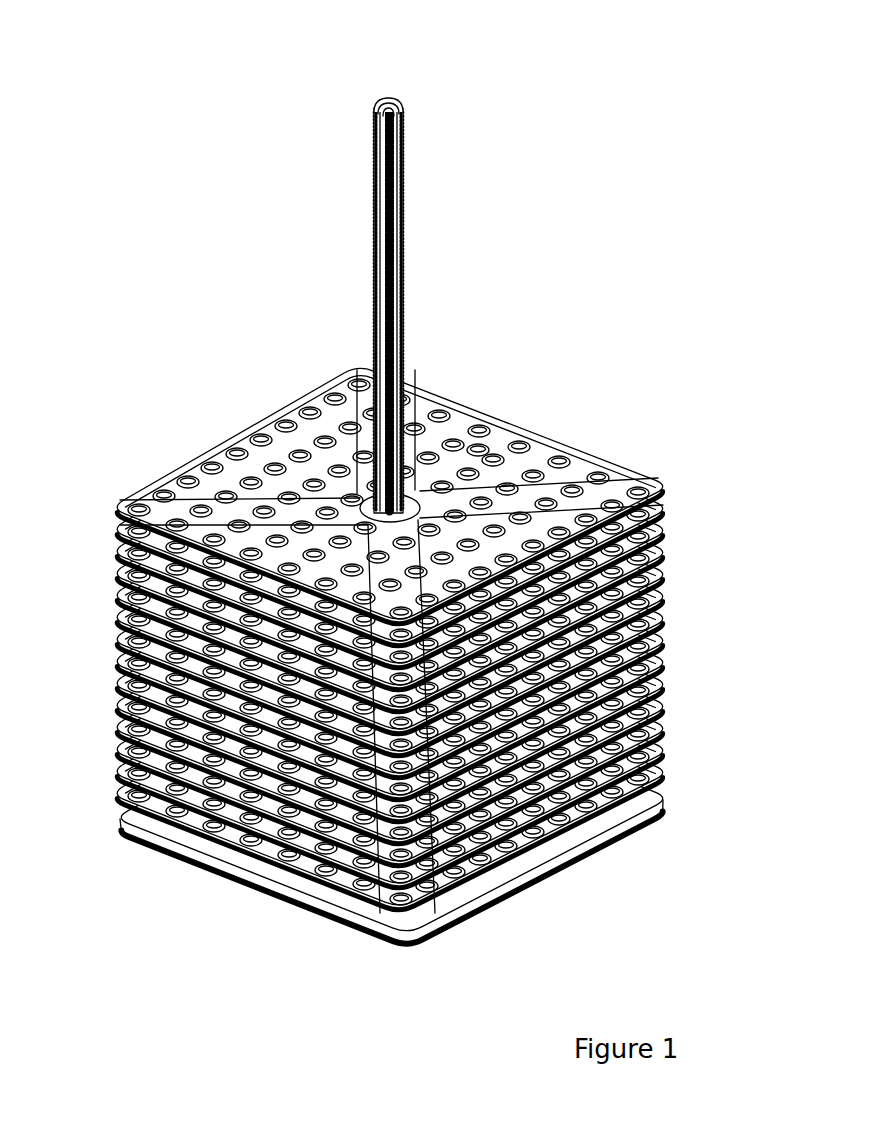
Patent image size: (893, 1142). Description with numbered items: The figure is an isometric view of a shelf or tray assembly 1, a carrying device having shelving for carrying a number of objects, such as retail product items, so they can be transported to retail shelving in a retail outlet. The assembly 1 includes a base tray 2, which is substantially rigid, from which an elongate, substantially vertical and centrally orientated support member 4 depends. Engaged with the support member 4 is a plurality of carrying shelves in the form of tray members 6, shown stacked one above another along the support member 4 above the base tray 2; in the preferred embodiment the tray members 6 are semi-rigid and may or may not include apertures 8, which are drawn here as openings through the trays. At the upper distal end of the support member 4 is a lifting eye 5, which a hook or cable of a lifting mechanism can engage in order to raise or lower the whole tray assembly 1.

The tray assembly 1 is at (275, 932).
The base tray 2 is at (505, 888).
The support member 4 is at (409, 290).
The lifting eye 5 is at (384, 92).
The tray members 6 is at (597, 440).
The apertures 8 is at (470, 440).